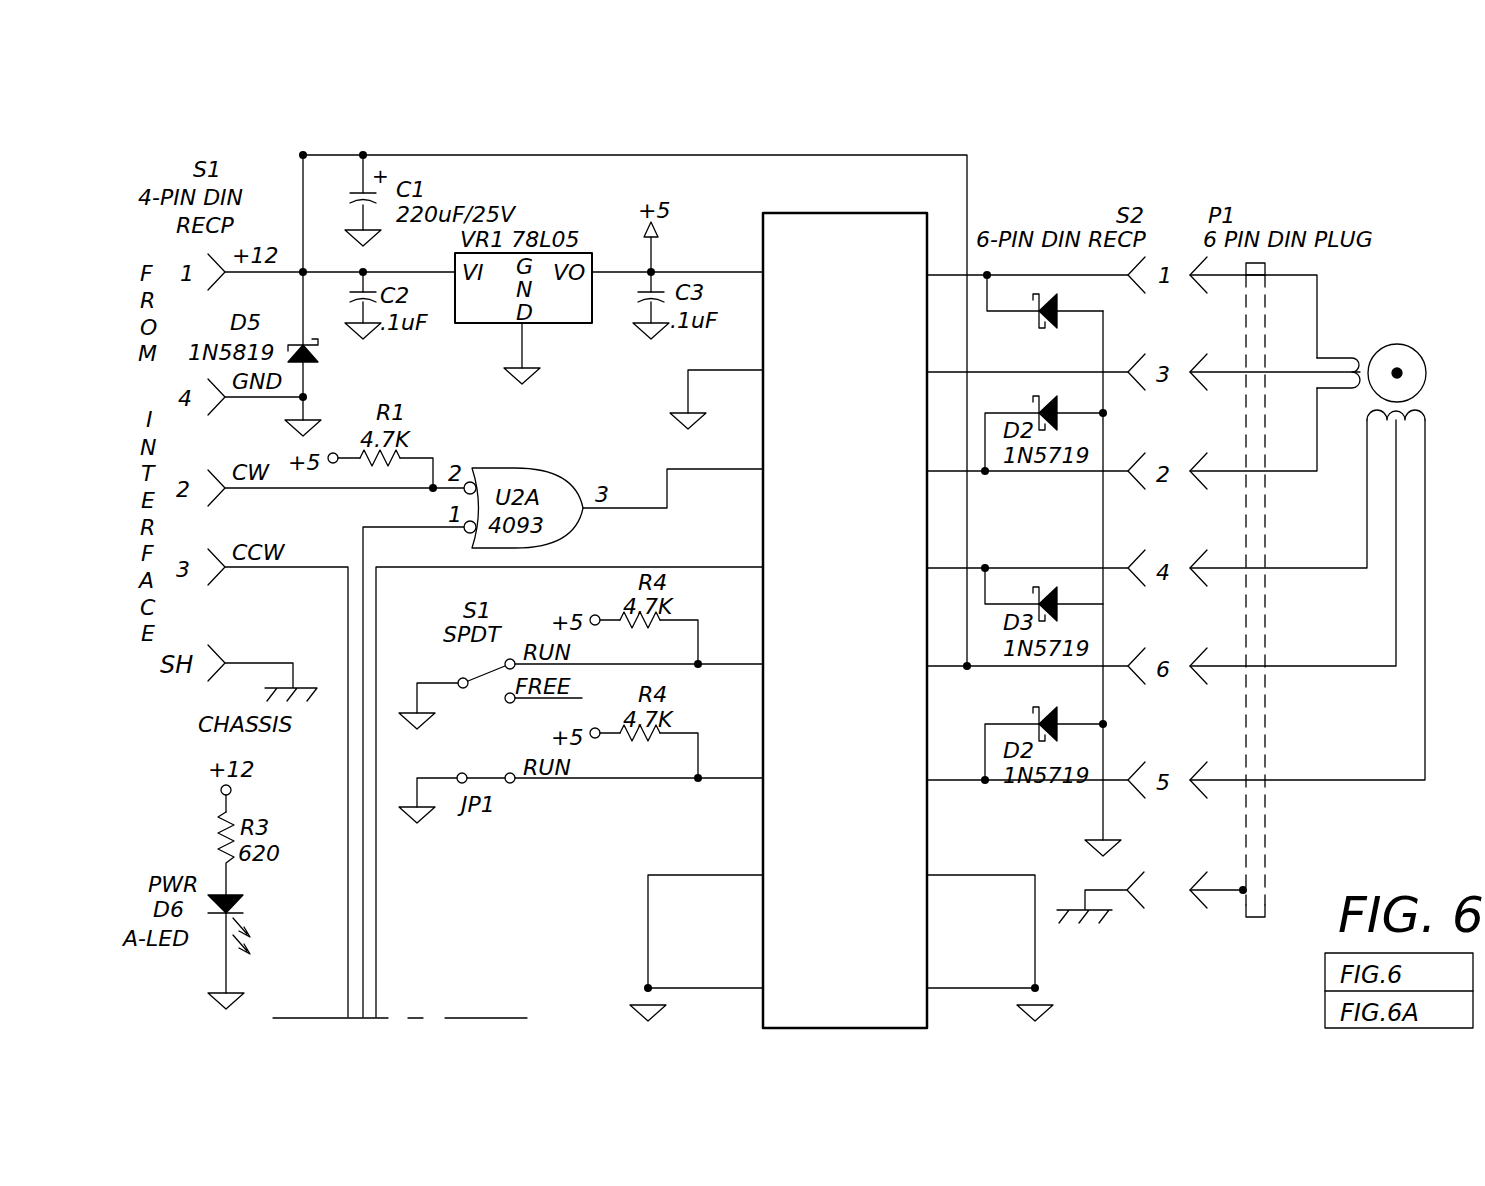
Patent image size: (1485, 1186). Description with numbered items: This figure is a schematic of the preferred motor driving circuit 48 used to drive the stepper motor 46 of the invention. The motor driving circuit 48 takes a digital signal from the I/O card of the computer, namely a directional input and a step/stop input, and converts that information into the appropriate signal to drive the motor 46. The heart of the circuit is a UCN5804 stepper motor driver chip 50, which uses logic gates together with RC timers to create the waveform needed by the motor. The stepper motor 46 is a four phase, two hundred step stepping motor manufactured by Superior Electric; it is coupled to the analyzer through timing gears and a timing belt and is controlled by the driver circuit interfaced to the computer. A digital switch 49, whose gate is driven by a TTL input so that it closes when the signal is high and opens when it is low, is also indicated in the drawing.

The stepper motor driver chip 50 is at (865, 213).
The motor driving circuit 48 is at (1060, 307).
The stepper motor 46 is at (1427, 376).
The digital switch 49 is at (1160, 900).